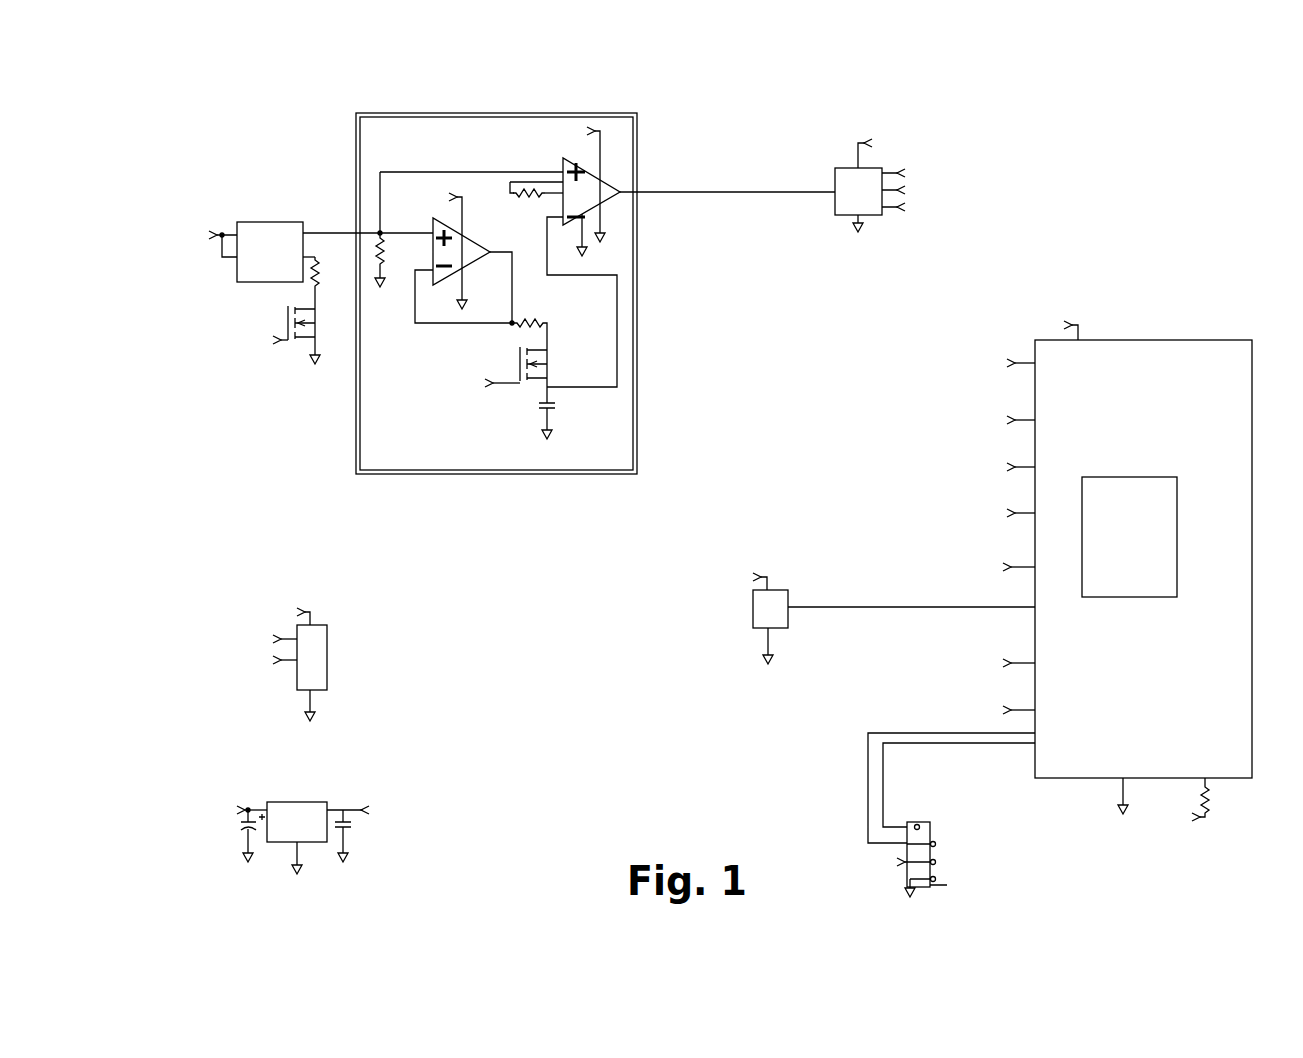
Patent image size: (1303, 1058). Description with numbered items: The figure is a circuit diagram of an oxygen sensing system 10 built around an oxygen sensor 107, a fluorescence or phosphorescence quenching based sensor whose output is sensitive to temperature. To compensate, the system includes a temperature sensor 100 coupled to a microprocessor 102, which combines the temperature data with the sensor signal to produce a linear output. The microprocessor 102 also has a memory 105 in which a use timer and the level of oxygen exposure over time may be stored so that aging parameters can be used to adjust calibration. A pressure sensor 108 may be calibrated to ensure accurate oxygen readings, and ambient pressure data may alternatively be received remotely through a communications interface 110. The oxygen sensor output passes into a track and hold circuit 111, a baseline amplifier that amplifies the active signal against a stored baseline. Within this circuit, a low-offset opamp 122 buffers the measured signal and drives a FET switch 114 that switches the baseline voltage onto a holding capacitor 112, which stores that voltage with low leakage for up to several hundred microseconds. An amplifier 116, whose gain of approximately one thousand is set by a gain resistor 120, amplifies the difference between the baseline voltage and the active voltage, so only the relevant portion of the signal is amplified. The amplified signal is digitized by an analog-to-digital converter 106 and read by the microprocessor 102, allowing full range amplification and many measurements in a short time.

The oxygen sensing system 10 is at (698, 515).
The temperature sensor 100 is at (745, 618).
The microprocessor 102 is at (1020, 578).
The memory 105 is at (1129, 537).
The analog-to-digital converter 106 is at (938, 148).
The oxygen sensor 107 is at (237, 217).
The pressure sensor 108 is at (340, 637).
The communications interface 110 is at (957, 845).
The track and hold circuit 111 is at (653, 292).
The capacitor 112 is at (562, 408).
The FET switch 114 is at (563, 342).
The amplifier 116 is at (613, 165).
The gain resistor 120 is at (520, 163).
The low-offset opamp 122 is at (408, 295).